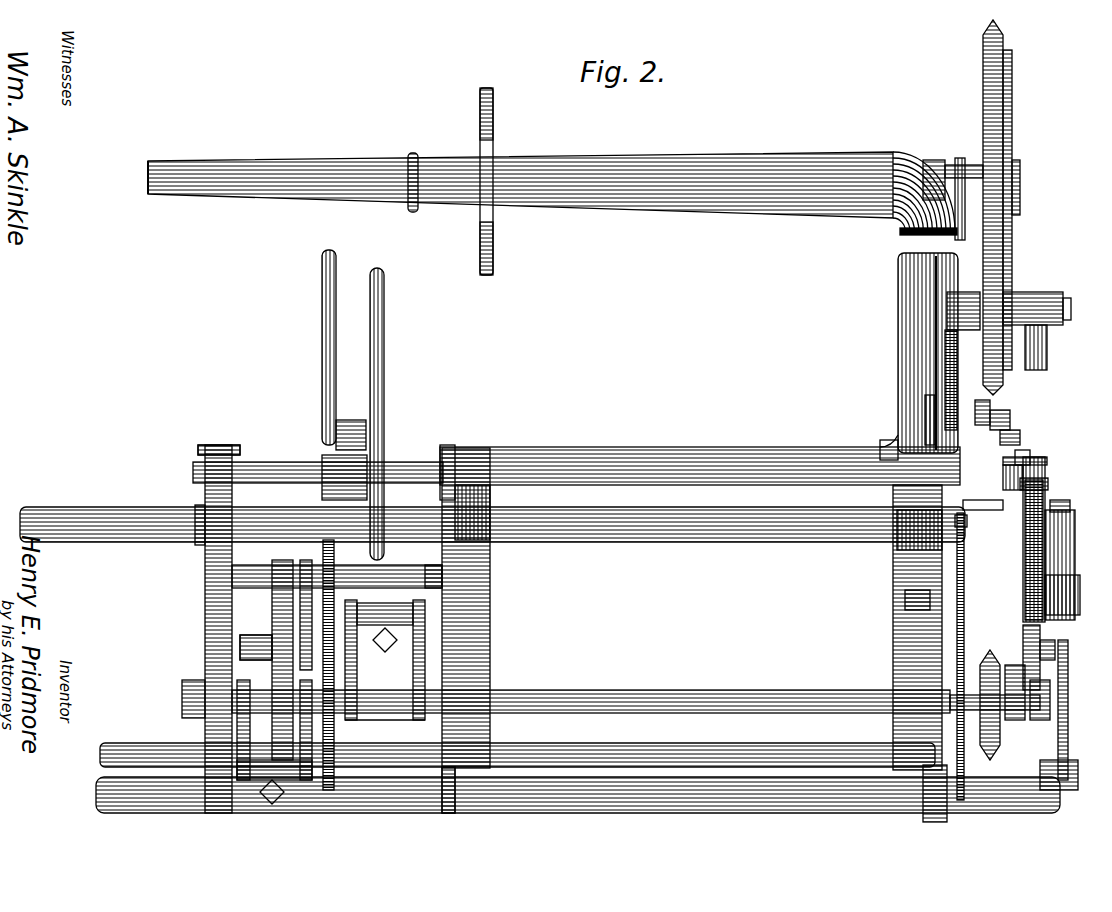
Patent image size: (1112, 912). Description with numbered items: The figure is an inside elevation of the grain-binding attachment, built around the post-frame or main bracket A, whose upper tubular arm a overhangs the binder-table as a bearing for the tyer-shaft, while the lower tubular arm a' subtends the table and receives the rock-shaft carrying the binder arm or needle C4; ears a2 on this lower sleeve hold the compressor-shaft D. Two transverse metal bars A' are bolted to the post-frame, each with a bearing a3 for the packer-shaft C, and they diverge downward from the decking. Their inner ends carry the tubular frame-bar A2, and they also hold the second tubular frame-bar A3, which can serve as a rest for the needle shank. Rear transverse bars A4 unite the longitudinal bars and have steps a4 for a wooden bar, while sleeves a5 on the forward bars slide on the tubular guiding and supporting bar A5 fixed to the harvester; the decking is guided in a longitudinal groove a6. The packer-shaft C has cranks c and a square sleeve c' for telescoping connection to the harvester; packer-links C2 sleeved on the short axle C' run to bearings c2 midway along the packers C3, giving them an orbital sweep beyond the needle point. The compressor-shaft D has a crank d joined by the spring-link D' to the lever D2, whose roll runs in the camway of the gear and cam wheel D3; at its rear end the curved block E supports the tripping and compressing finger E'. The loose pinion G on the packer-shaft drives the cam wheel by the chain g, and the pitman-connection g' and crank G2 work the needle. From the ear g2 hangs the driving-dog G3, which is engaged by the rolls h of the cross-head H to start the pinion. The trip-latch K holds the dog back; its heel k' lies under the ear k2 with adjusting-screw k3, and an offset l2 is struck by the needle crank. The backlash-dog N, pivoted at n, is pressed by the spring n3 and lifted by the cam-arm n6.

The tubular arm or sleeve a is at (552, 181).
The tubular arm or sleeve a' is at (443, 467).
The ears or lugs a2 is at (447, 445).
The bearing a3 is at (698, 598).
The steps a4 is at (203, 447).
The sleeves a5 is at (455, 790).
The longitudinal groove a6 is at (948, 793).
The post-frame or main bracket A is at (919, 353).
The transverse metal bars A' is at (692, 630).
The tubular frame-bar A2 is at (517, 752).
The tubular frame-bar A3 is at (492, 524).
The transverse metal frame-bars A4 is at (205, 640).
The tubular guiding and supporting bar A5 is at (578, 795).
The packer-shaft C is at (591, 690).
The short axle C' is at (432, 576).
The packer-links C2 is at (365, 562).
The packers C3 is at (384, 345).
The binder arm or needle C4 is at (334, 730).
The cranks c is at (331, 702).
The square sleeve c' is at (182, 698).
The bearings c2 is at (242, 660).
The compressor-shaft D is at (700, 457).
The spring-link D' is at (948, 294).
The lever D2 is at (940, 160).
The gear and cam wheel D3 is at (1001, 207).
The crank d is at (945, 432).
The curved block E is at (344, 445).
The tripping and compressing finger E' is at (316, 347).
The sprocket wheel or pinion G is at (995, 705).
The crank G2 is at (1043, 490).
The driving-dog G3 is at (1023, 640).
The chain g is at (1040, 700).
The pitman-connection g' is at (1020, 456).
The ear g2 is at (1013, 685).
The cross-head H is at (1068, 740).
The anti-friction roll h is at (1059, 720).
The trip-latch K is at (1030, 457).
The heel k' is at (1011, 440).
The ear k2 is at (1005, 420).
The adjusting-screw k3 is at (986, 410).
The lug l2 is at (1038, 464).
The backlash-dog N is at (964, 585).
The pivot n is at (905, 600).
The spring n3 is at (958, 515).
The cam-arm n6 is at (988, 512).